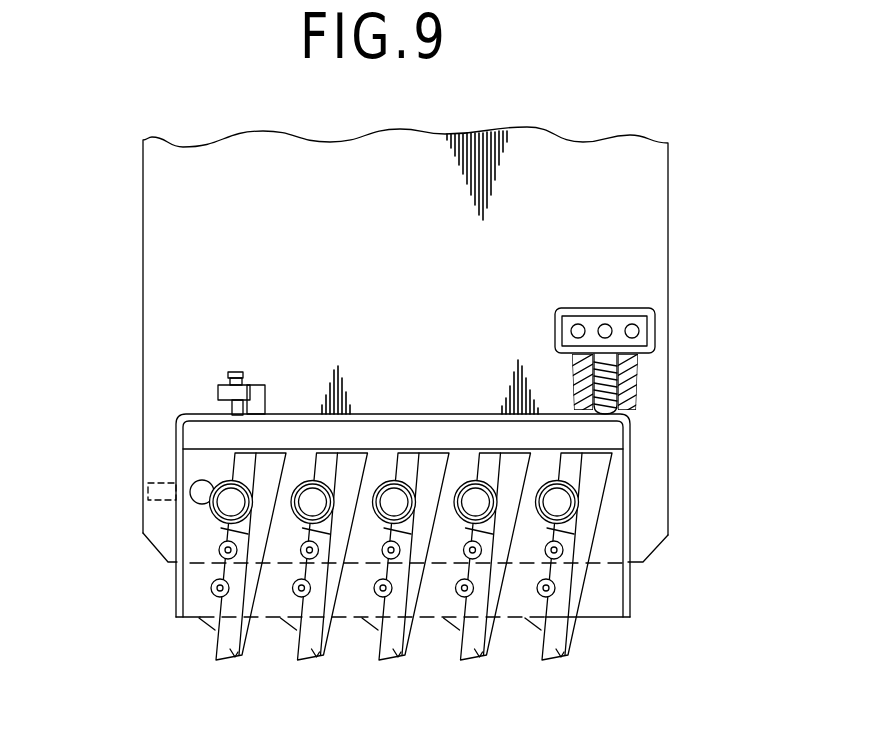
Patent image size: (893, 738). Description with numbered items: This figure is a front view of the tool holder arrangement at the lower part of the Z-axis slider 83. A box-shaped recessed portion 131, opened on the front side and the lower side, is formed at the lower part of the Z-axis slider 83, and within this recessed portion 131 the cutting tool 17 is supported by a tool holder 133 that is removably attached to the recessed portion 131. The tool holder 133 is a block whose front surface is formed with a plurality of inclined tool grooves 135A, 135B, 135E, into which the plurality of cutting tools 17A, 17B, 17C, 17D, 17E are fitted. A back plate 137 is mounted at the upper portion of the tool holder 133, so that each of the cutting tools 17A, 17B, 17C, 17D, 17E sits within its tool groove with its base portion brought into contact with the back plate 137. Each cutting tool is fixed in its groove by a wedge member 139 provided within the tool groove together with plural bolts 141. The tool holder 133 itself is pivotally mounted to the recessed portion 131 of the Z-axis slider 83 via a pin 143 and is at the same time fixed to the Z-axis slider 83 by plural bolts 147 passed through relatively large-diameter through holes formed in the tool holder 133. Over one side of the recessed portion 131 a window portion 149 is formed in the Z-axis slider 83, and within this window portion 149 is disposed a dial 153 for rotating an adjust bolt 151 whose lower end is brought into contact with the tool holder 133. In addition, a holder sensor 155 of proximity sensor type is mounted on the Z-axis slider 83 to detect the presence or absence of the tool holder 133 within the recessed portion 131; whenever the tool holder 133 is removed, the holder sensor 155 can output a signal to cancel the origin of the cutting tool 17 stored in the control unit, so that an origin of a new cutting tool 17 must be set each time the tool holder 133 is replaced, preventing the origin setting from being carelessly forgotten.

The cutting tool 17 is at (374, 595).
The cutting tool 17A is at (236, 658).
The cutting tool 17B is at (318, 658).
The cutting tool 17C is at (399, 658).
The cutting tool 17D is at (480, 658).
The cutting tool 17E is at (562, 658).
The Z-axis slider 83 is at (143, 270).
The recessed portion 131 is at (178, 523).
The tool holder 133 is at (614, 596).
The tool groove 135A is at (256, 458).
The tool groove 135B is at (338, 458).
The tool groove 135E is at (578, 472).
The back plate 137 is at (205, 432).
The wedge member 139 is at (212, 628).
The bolt 141 is at (211, 588).
The pin 143 is at (192, 483).
The bolt 147 is at (474, 498).
The window portion 149 is at (620, 307).
The adjust bolt 151 is at (640, 382).
The dial 153 is at (652, 310).
The holder sensor 155 is at (250, 385).